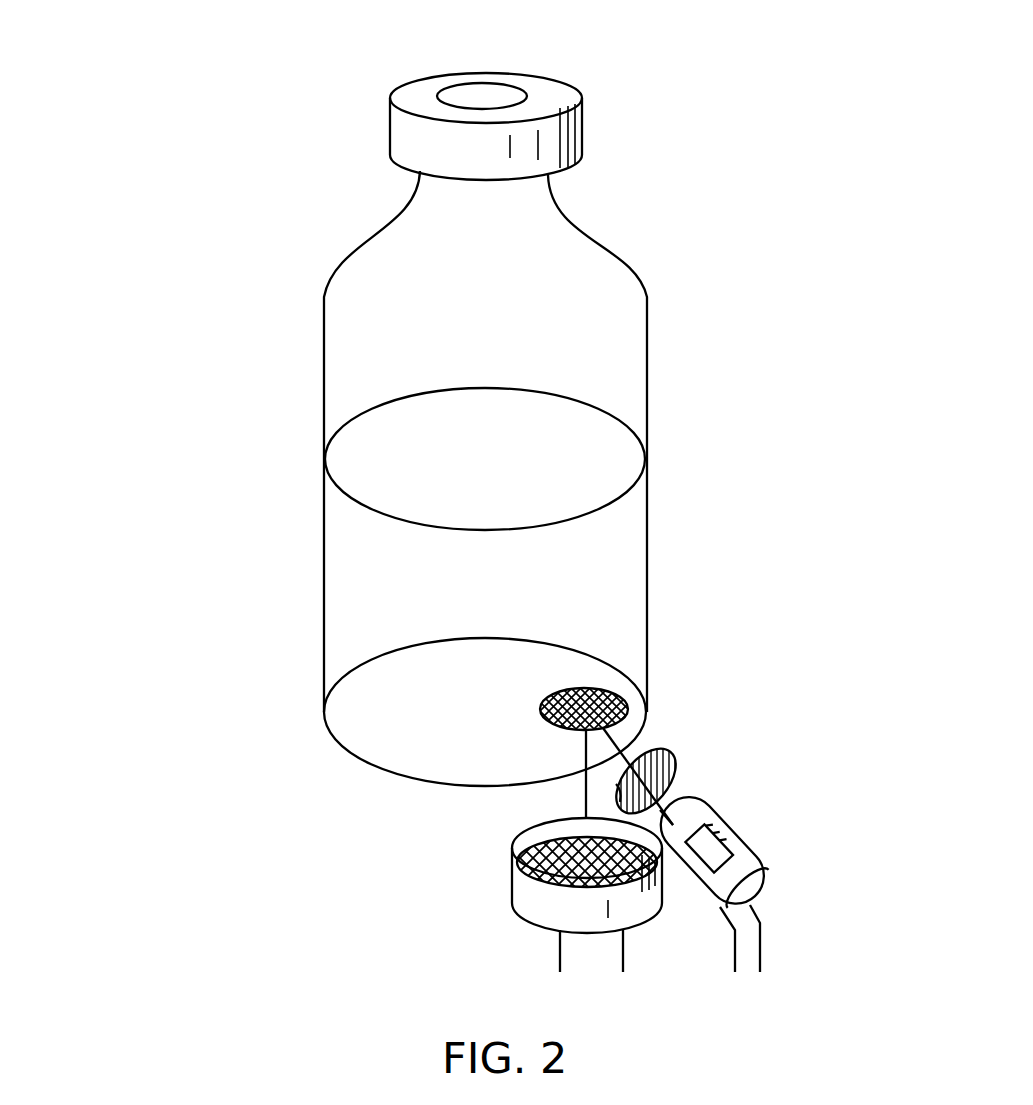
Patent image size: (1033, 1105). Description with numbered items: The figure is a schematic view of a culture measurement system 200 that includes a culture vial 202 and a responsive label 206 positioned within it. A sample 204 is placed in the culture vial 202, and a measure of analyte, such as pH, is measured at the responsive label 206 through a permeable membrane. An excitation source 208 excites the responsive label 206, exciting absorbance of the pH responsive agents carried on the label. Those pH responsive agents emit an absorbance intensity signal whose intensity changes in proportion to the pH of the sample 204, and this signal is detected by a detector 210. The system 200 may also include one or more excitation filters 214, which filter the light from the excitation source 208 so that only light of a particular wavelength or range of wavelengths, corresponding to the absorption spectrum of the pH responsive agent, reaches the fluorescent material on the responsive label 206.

The culture measurement system 200 is at (247, 192).
The culture vial 202 is at (645, 290).
The sample 204 is at (613, 583).
The responsive label 206 is at (590, 710).
The excitation source 208 is at (747, 878).
The detector 210 is at (532, 900).
The excitation filter 214 is at (677, 766).